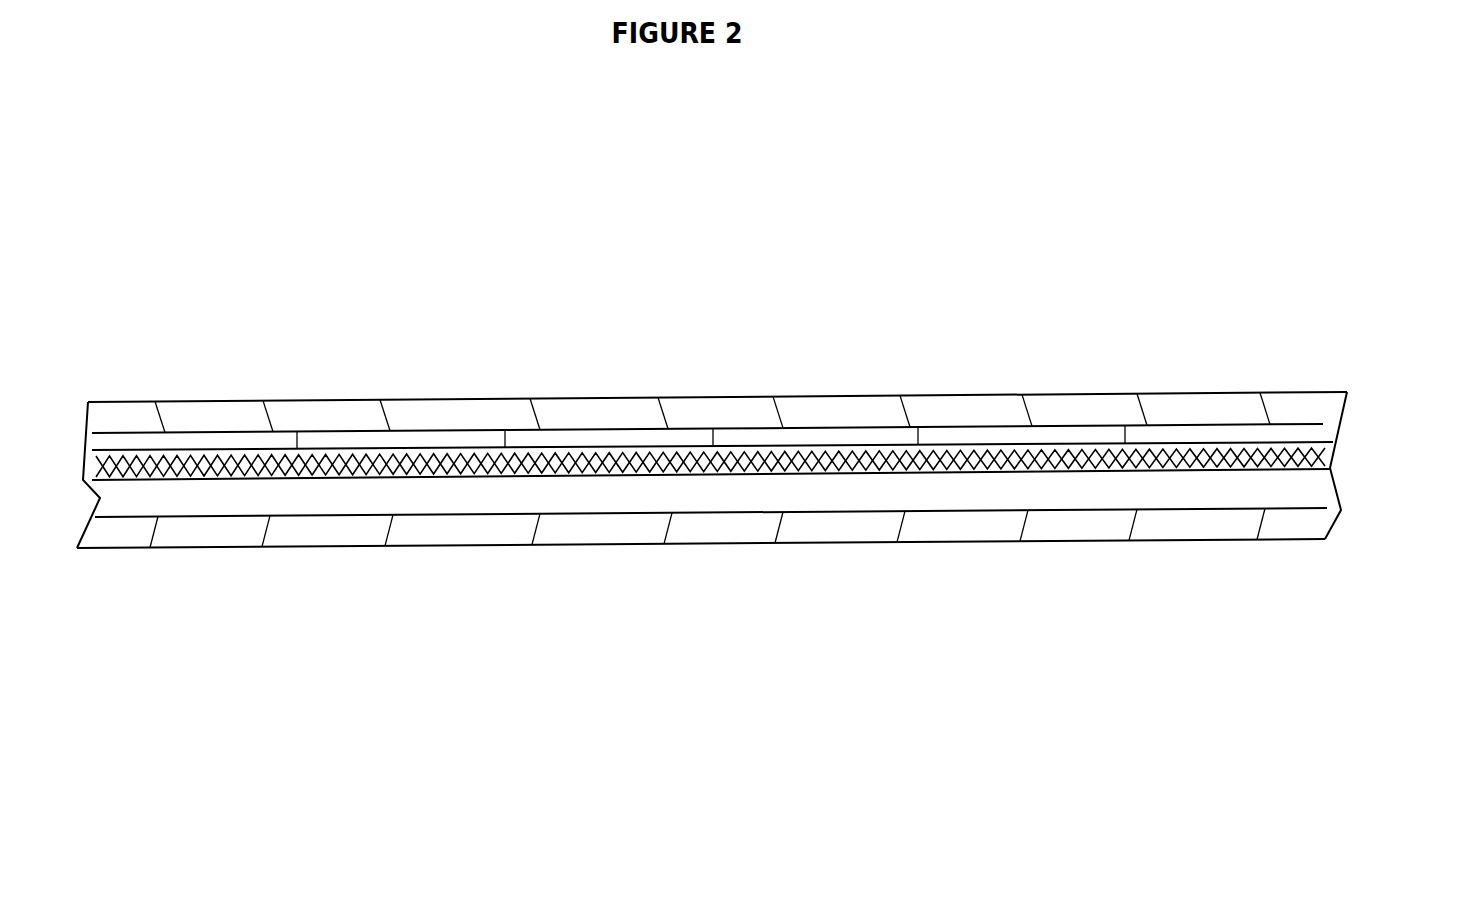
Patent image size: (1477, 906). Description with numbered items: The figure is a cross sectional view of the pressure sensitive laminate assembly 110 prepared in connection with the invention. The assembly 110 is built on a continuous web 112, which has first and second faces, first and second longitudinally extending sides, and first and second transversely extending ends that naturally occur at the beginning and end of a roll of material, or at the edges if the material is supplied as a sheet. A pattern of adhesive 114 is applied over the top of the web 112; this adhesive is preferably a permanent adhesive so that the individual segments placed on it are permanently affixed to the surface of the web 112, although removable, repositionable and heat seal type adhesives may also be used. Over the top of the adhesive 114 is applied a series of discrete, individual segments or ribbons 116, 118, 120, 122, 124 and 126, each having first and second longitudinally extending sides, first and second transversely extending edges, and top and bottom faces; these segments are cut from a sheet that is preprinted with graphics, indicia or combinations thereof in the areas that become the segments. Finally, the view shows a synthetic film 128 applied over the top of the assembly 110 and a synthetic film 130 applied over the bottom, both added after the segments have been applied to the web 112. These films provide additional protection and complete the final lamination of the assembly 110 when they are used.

The pressure sensitive laminate assembly 110 is at (1325, 350).
The continuous web 112 is at (882, 507).
The pattern of adhesive 114 is at (1322, 450).
The segment 116 is at (1213, 432).
The segment 118 is at (1012, 432).
The segment 120 is at (760, 433).
The segment 122 is at (642, 433).
The segment 124 is at (383, 448).
The segment 126 is at (260, 442).
The synthetic film 128 is at (203, 400).
The synthetic film 130 is at (262, 532).